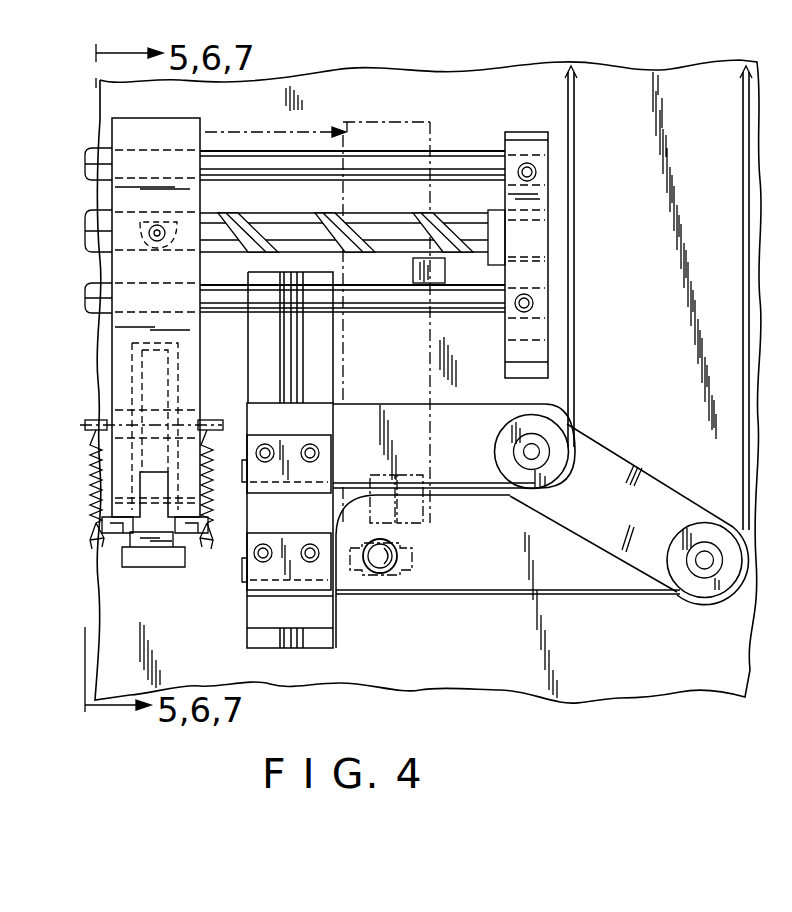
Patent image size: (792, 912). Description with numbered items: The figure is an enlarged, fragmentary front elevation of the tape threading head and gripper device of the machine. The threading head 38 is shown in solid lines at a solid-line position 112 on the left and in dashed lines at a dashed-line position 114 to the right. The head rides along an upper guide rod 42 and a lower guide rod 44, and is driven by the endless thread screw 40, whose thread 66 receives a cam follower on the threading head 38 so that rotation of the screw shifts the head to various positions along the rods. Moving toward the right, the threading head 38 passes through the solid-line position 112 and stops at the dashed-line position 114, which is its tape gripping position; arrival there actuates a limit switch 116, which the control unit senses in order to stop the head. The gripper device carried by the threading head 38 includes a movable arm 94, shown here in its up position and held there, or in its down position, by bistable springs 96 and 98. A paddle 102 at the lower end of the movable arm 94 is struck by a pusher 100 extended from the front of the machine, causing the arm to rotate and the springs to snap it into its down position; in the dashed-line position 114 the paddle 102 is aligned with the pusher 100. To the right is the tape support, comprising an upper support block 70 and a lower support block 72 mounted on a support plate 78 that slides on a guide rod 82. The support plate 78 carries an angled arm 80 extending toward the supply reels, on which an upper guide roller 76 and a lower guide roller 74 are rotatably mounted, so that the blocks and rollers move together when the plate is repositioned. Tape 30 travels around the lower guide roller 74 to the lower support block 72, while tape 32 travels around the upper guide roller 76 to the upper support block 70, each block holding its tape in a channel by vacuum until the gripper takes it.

The tape 30 is at (745, 120).
The tape 32 is at (575, 117).
The threading head 38 is at (167, 97).
The endless thread screw 40 is at (278, 228).
The guide rod 42 is at (480, 160).
The guide rod 44 is at (450, 297).
The thread 66 is at (337, 227).
The upper support block 70 is at (250, 440).
The lower support block 72 is at (315, 572).
The lower guide roller 74 is at (707, 530).
The upper guide roller 76 is at (571, 468).
The support plate 78 is at (303, 529).
The angled arm 80 is at (468, 453).
The guide rod 82 is at (288, 348).
The movable arm 94 is at (160, 360).
The bistable spring 96 is at (82, 548).
The bistable spring 98 is at (214, 500).
The pusher 100 is at (380, 562).
The paddle 102 is at (158, 548).
The solid-line position 112 is at (203, 120).
The dashed-line position 114 is at (437, 94).
The limit switch 116 is at (413, 272).